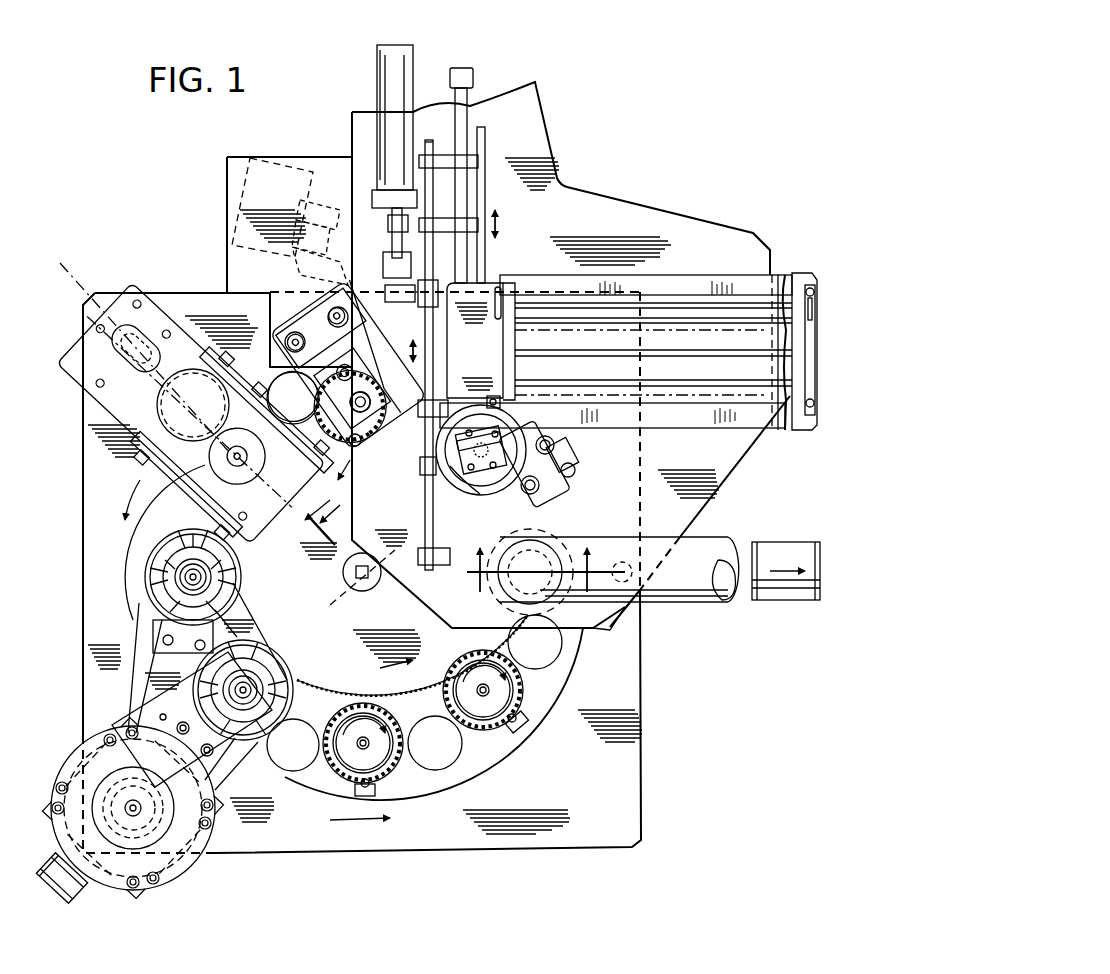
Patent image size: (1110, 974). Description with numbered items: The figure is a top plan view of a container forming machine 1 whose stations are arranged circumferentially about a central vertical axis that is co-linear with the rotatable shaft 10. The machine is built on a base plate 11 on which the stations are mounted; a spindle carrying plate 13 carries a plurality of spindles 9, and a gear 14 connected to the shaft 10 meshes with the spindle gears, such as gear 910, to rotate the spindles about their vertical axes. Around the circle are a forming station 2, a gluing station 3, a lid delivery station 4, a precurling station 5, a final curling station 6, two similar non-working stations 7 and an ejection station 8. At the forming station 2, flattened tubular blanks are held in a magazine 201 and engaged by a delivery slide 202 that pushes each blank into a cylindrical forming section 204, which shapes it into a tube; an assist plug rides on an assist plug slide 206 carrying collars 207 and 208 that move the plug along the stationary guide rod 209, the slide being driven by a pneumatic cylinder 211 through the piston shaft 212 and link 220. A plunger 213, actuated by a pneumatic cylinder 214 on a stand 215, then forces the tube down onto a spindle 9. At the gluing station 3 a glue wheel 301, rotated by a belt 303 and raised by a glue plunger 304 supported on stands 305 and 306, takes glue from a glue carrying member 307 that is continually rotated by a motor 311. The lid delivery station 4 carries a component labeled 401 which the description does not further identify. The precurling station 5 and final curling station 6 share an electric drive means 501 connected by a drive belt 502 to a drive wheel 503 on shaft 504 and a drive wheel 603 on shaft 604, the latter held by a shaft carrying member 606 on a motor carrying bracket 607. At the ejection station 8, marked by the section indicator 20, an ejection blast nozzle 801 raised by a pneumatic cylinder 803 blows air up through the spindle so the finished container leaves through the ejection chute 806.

The container forming machine 1 is at (522, 46).
The forming station 2 is at (65, 300).
The gluing station 3 is at (255, 287).
The lid delivery station 4 is at (148, 466).
The precurling station 5 is at (125, 585).
The final curling station 6 is at (228, 753).
The non-working stations 7 is at (390, 782).
The ejection station 8 is at (570, 610).
The spindles 9 is at (350, 757).
The shaft 10 is at (363, 592).
The base plate 11 is at (640, 793).
The spindle carrying plate 13 is at (555, 676).
The gear 14 is at (443, 648).
The section line 20 is at (526, 553).
The magazine 201 is at (670, 286).
The delivery slide 202 is at (484, 165).
The cylindrical forming section 204 is at (478, 495).
The assist plug slide 206 is at (438, 340).
The collar 207 is at (420, 418).
The collar 208 is at (424, 478).
The stationary guide rod 209 is at (428, 528).
The pneumatic cylinder 211 is at (385, 78).
The piston shaft 212 is at (393, 236).
The plunger 213 is at (487, 490).
The pneumatic cylinder 214 is at (512, 424).
The stand 215 is at (555, 462).
The link 220 is at (415, 303).
The glue wheel 301 is at (368, 400).
The belt 303 is at (395, 349).
The glue plunger 304 is at (340, 375).
The stand 305 is at (285, 330).
The stand 306 is at (330, 315).
The glue carrying member 307 is at (358, 446).
The motor 311 is at (245, 185).
The drive wheel 401 is at (165, 400).
The electric drive means 501 is at (170, 860).
The drive belt 502 is at (130, 684).
The drive wheel 503 is at (233, 562).
The shaft 504 is at (212, 578).
The drive wheel 603 is at (285, 672).
The shaft 604 is at (252, 678).
The shaft carrying member 606 is at (247, 682).
The motor carrying bracket 607 is at (148, 710).
The ejection blast nozzle 801 is at (500, 592).
The pneumatic cylinder 803 is at (520, 540).
The ejection chute 806 is at (700, 548).
The gear 910 is at (395, 768).